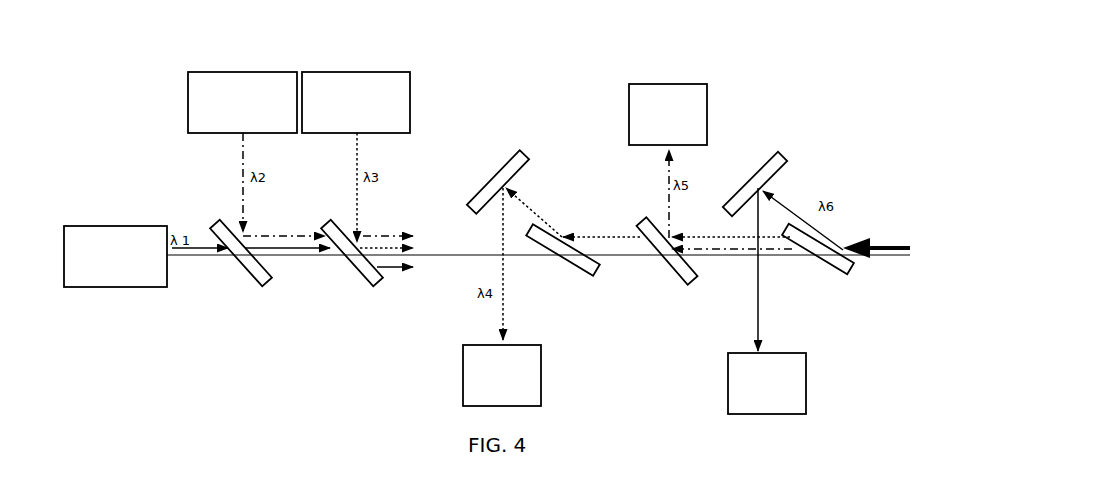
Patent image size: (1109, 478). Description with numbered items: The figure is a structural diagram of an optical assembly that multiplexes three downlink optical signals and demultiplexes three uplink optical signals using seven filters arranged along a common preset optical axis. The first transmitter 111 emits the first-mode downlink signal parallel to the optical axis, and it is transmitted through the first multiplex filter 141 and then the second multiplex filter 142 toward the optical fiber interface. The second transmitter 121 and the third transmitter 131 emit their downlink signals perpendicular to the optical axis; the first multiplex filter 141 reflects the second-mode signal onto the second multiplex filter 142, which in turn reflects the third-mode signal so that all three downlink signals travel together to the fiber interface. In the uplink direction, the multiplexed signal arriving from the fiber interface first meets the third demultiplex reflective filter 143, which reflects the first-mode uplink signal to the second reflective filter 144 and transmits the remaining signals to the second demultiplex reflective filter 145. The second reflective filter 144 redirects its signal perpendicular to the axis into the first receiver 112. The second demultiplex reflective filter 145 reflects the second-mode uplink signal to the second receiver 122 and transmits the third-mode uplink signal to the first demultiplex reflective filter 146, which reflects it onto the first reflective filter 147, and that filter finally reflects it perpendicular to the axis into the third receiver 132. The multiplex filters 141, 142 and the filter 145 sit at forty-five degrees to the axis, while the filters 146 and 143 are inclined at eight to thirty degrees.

The first transmitter 111 is at (115, 225).
The second transmitter 121 is at (245, 71).
The third transmitter 131 is at (357, 71).
The first receiver 112 is at (786, 352).
The second receiver 122 is at (670, 83).
The third receiver 132 is at (520, 344).
The first multiplex filter 141 is at (247, 274).
The second multiplex filter 142 is at (353, 274).
The third demultiplex reflective filter 143 is at (848, 276).
The second reflective filter 144 is at (778, 155).
The second demultiplex reflective filter 145 is at (678, 279).
The first demultiplex reflective filter 146 is at (572, 266).
The first reflective filter 147 is at (526, 149).